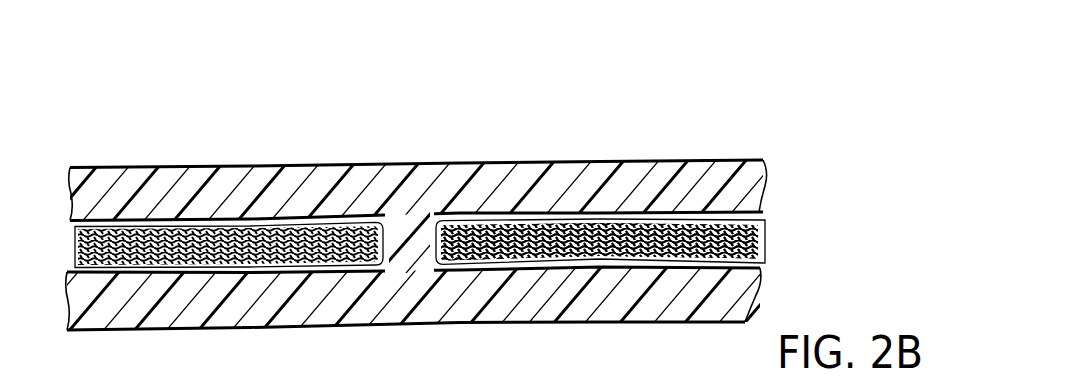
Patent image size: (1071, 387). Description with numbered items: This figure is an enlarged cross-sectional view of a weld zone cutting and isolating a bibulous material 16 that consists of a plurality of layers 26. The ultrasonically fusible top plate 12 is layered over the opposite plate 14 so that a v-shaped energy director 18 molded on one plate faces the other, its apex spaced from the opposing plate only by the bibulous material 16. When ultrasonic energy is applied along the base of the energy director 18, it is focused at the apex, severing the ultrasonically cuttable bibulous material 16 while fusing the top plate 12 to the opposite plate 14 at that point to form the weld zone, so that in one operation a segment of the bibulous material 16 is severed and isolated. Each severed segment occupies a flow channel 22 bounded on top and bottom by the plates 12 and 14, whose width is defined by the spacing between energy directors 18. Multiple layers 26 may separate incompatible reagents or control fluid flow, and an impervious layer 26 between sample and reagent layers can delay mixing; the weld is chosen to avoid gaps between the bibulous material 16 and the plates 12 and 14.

The top plate 12 is at (648, 172).
The opposite plate 14 is at (544, 298).
The bibulous material 16 is at (852, 213).
The energy director 18 is at (411, 276).
The flow channel 22 is at (270, 268).
The layers 26 is at (760, 250).